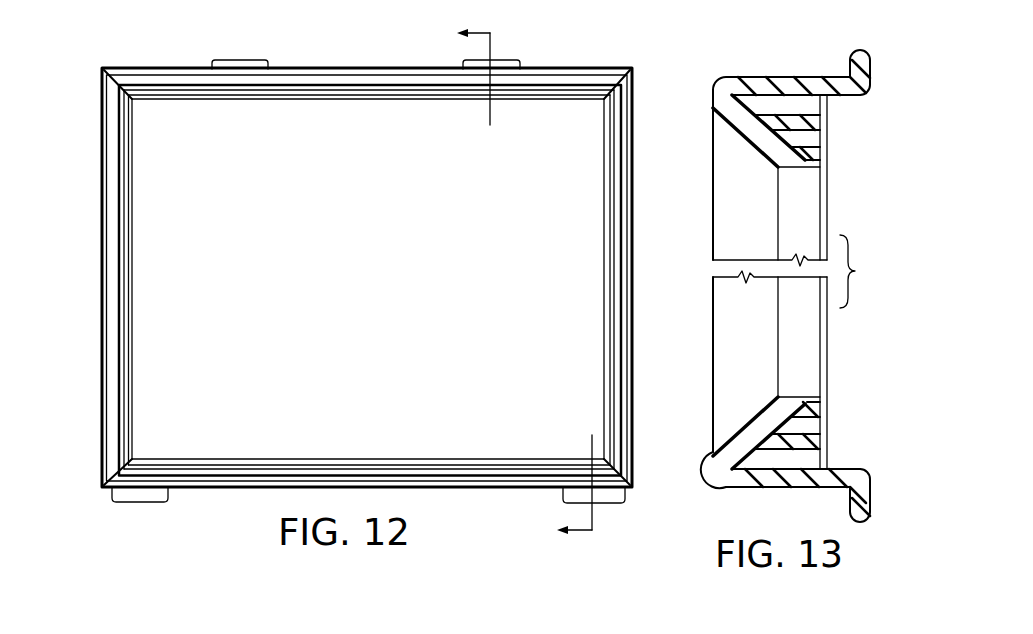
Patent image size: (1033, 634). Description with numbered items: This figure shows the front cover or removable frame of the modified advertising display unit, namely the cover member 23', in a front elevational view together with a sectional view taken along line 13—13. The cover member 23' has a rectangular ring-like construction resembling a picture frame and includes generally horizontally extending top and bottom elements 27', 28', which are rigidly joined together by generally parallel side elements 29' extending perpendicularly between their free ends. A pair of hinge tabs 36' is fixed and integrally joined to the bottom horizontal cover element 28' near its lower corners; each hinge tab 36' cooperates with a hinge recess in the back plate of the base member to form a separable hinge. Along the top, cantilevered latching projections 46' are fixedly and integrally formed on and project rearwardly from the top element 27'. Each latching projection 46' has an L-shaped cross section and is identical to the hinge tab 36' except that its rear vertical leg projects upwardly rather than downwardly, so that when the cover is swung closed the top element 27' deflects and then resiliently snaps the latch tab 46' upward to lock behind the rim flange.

In FIG. 12, the cover member 23' is at (332, 277).
In FIG. 13, the cover member 23' is at (783, 242).
In FIG. 12, the top element 27' is at (369, 52).
In FIG. 13, the top element 27' is at (760, 142).
In FIG. 12, the bottom element 28' is at (369, 501).
In FIG. 13, the bottom element 28' is at (760, 433).
In FIG. 12, the side elements 29' is at (357, 278).
In FIG. 12, the latching projection 46' is at (392, 38).
In FIG. 13, the latching projection 46' is at (869, 104).
In FIG. 12, the hinge tab 36' is at (366, 531).
In FIG. 13, the hinge tab 36' is at (867, 467).
In FIG. 12, the section line 13 is at (504, 281).